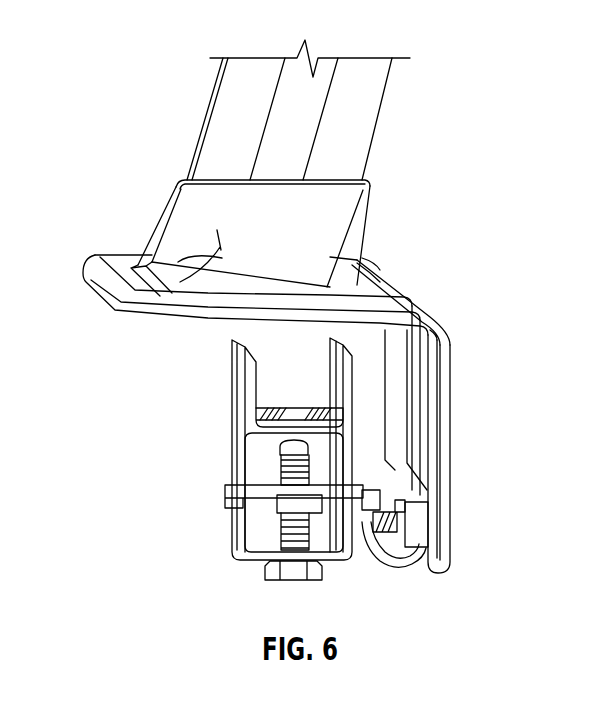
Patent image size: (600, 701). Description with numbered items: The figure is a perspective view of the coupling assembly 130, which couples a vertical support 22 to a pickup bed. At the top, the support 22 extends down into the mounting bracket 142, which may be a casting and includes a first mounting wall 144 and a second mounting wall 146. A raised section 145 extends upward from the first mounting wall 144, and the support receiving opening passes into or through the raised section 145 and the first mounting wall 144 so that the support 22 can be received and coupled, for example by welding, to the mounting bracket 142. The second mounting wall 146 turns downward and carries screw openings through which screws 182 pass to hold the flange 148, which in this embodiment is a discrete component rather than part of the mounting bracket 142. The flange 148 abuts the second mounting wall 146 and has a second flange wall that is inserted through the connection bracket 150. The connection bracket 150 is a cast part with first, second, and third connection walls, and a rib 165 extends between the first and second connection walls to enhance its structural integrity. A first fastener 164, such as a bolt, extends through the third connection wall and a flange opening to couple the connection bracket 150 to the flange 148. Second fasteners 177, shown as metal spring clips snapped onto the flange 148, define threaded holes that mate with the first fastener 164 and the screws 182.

The support 22 is at (372, 103).
The coupling assembly 130 is at (427, 267).
The mounting bracket 142 is at (425, 310).
The first mounting wall 144 is at (113, 258).
The raised section 145 is at (340, 207).
The second mounting wall 146 is at (453, 432).
The flange 148 is at (402, 577).
The connection bracket 150 is at (223, 397).
The first fastener 164 is at (273, 547).
The rib 165 is at (282, 410).
The second fastener 177 is at (256, 513).
The screw 182 is at (422, 520).